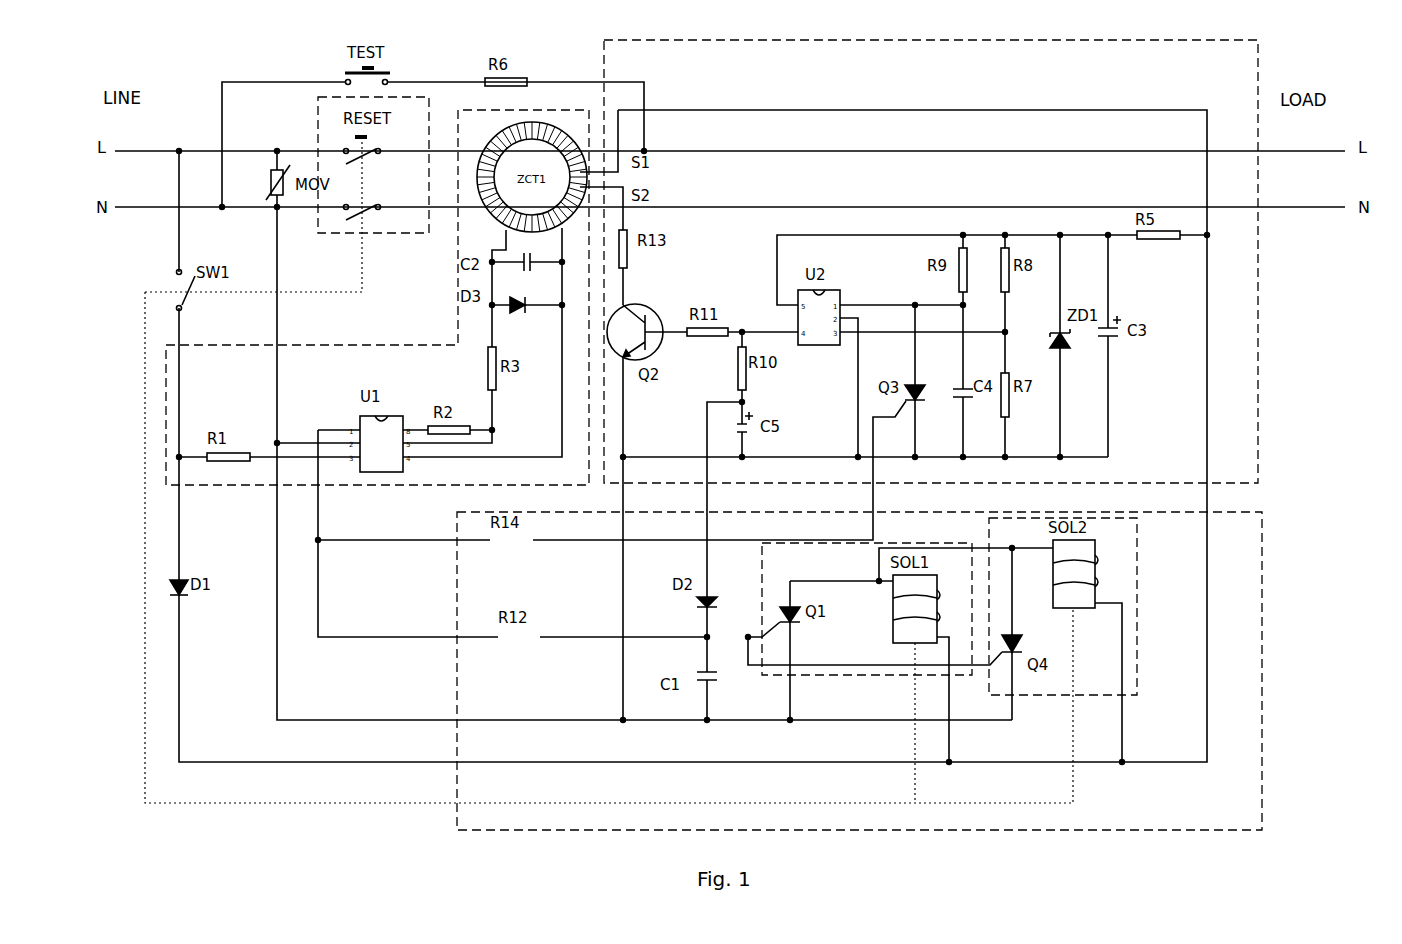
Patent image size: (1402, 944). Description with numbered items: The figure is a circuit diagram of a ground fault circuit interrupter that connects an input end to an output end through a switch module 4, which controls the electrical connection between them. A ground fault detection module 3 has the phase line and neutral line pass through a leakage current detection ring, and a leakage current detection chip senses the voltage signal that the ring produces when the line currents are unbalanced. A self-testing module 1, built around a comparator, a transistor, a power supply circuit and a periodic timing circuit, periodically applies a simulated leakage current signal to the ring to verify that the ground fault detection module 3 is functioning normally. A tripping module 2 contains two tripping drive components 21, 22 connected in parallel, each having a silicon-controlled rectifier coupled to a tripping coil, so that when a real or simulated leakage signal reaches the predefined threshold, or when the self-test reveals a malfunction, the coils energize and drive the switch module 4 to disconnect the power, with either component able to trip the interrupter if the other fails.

The self-testing module 1 is at (1213, 58).
The tripping module 2 is at (1243, 612).
The ground fault detection module 3 is at (372, 355).
The switch module 4 is at (411, 148).
The tripping drive component 21 is at (813, 677).
The tripping drive component 22 is at (1137, 618).